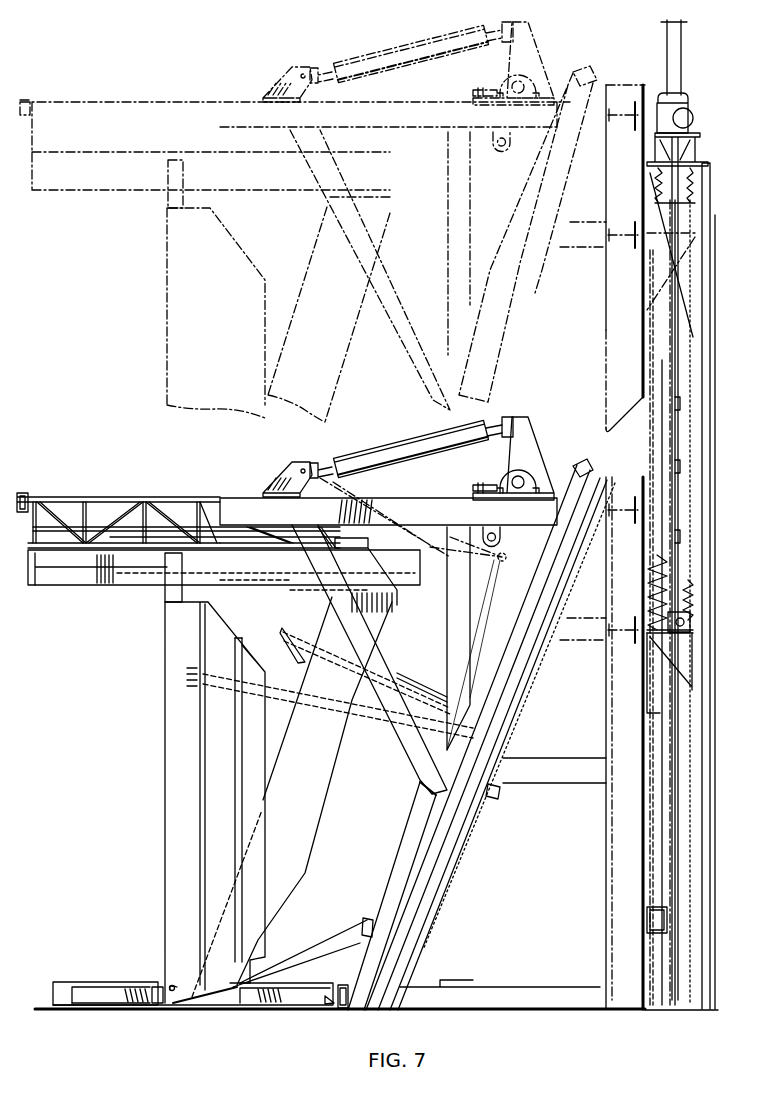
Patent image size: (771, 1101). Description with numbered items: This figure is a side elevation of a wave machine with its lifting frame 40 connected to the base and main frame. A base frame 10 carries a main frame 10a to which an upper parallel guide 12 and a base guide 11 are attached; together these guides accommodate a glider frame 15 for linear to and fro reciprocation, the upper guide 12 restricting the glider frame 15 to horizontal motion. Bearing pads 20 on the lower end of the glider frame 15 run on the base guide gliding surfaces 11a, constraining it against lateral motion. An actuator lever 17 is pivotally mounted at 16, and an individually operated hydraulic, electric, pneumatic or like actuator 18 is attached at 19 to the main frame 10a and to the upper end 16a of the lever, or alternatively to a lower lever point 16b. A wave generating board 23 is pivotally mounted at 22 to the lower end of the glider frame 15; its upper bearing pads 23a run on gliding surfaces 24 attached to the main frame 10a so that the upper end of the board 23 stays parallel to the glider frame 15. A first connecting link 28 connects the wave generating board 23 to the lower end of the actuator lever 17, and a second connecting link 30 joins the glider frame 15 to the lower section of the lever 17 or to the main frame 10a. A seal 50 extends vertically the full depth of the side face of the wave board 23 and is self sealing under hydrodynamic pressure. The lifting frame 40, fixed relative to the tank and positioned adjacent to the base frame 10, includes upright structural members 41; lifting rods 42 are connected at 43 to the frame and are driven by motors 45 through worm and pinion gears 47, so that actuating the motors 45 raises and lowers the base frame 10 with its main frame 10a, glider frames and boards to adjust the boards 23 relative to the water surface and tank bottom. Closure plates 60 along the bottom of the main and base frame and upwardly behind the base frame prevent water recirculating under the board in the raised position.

The base frame 10 is at (607, 277).
The main frame 10a is at (238, 497).
The base guide 11 is at (128, 983).
The base guide gliding surface 11a is at (113, 990).
The upper parallel guide 12 is at (411, 547).
The glider frame 15 is at (367, 586).
The pivot 16 is at (512, 483).
The upper end of actuator lever 16a is at (503, 426).
The lower lever point 16b is at (500, 558).
The actuator lever 17 is at (533, 440).
The actuator 18 is at (397, 443).
The actuator attachment point 19 is at (287, 468).
The bearing pad 20 is at (150, 995).
The pivot mounting 22 is at (173, 997).
The wave generating board 23 is at (167, 270).
The upper bearing pad 23a is at (163, 558).
The gliding surface 24 is at (70, 560).
The first connecting link 28 is at (363, 710).
The second connecting link 30 is at (402, 672).
The lifting frame 40 is at (695, 773).
The upright structural member 41 is at (677, 547).
The lifting rod 42 is at (670, 442).
The connection 43 is at (657, 650).
The motor 45 is at (667, 35).
The worm and pinion gears 47 is at (655, 95).
The seal 50 is at (215, 843).
The closure plate 60 is at (494, 1010).